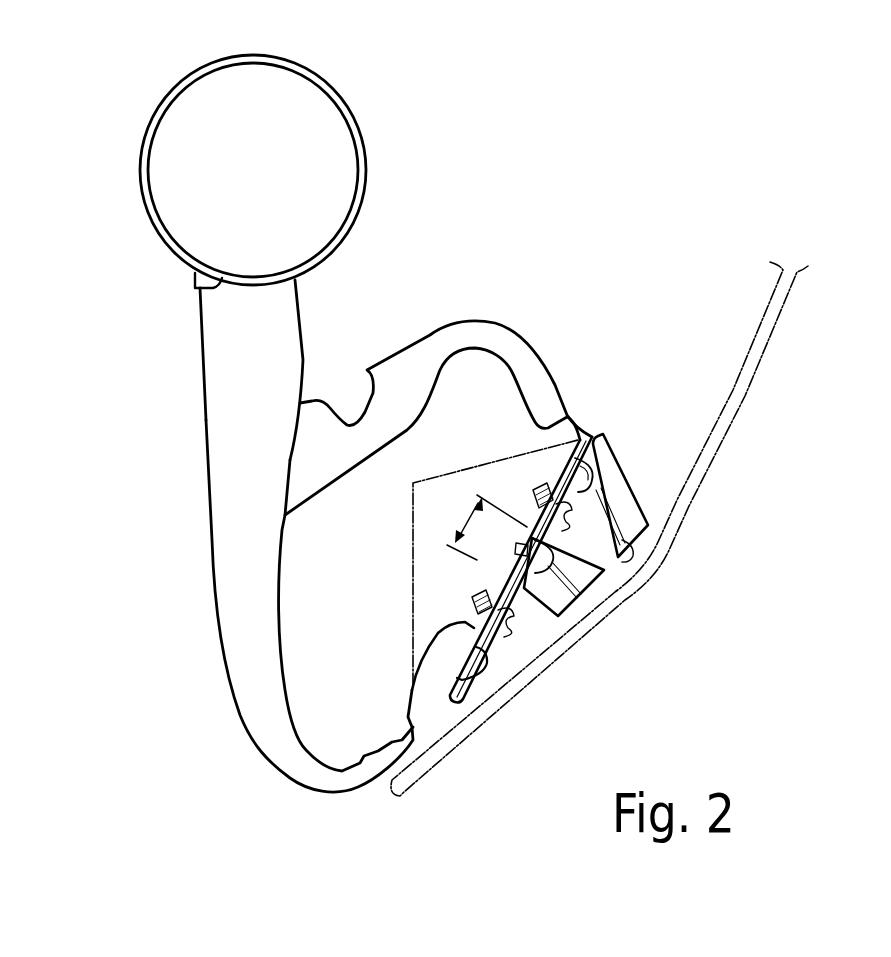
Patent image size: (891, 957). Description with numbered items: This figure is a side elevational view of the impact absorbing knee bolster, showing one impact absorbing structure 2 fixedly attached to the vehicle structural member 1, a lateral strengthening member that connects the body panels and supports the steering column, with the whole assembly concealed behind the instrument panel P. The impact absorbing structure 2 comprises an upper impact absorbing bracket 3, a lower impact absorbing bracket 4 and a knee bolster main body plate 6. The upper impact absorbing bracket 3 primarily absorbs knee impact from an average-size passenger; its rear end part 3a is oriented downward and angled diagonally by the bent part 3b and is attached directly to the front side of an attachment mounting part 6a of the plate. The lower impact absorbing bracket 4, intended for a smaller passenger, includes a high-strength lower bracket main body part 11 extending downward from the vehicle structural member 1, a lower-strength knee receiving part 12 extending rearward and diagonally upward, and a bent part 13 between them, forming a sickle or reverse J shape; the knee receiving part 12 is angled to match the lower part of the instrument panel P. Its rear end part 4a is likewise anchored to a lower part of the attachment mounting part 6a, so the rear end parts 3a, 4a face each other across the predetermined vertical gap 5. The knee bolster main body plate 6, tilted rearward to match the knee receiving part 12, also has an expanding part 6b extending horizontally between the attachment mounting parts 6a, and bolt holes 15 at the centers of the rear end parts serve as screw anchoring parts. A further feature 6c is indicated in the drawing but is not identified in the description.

The vehicle structural member 1 is at (146, 104).
The impact absorbing structure 2 is at (526, 250).
The upper impact absorbing bracket 3 is at (430, 335).
The rear end part of upper impact absorbing bracket 3a is at (575, 465).
The bent part of upper impact absorbing bracket 3b is at (587, 414).
The lower impact absorbing bracket 4 is at (210, 650).
The rear end part of lower impact absorbing bracket 4a is at (485, 587).
The predetermined vertical gap 5 is at (458, 522).
The knee bolster main body plate 6 is at (413, 552).
The attachment mounting part 6a is at (478, 624).
The expanding part 6b is at (614, 568).
The clip flange 6c is at (633, 551).
The lower bracket main body part 11 is at (212, 403).
The knee receiving part 12 is at (429, 688).
The bent part 13 is at (262, 762).
The bolt hole 15 is at (570, 540).
The instrument panel P is at (777, 333).